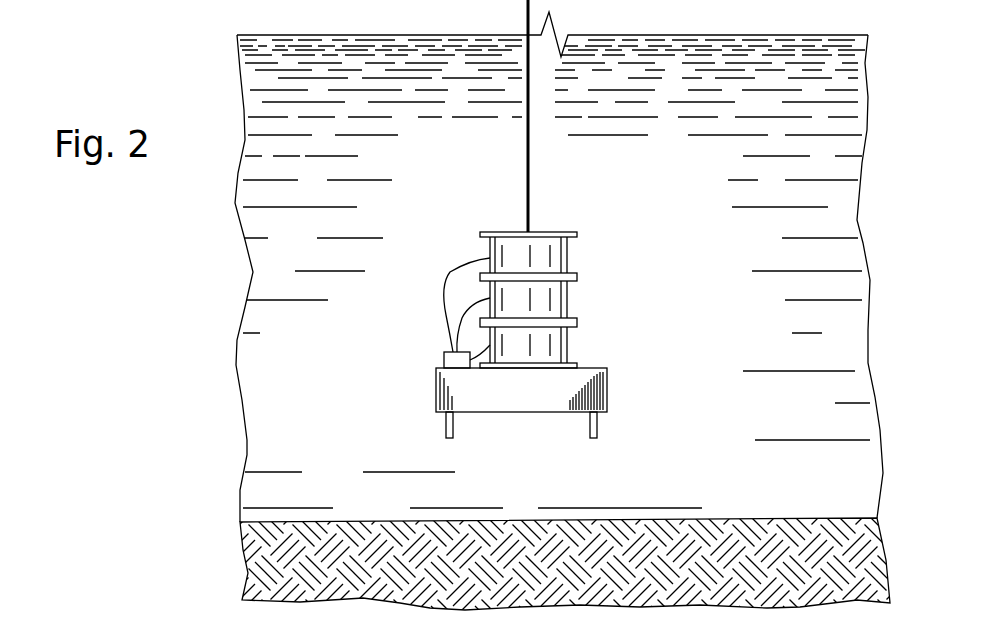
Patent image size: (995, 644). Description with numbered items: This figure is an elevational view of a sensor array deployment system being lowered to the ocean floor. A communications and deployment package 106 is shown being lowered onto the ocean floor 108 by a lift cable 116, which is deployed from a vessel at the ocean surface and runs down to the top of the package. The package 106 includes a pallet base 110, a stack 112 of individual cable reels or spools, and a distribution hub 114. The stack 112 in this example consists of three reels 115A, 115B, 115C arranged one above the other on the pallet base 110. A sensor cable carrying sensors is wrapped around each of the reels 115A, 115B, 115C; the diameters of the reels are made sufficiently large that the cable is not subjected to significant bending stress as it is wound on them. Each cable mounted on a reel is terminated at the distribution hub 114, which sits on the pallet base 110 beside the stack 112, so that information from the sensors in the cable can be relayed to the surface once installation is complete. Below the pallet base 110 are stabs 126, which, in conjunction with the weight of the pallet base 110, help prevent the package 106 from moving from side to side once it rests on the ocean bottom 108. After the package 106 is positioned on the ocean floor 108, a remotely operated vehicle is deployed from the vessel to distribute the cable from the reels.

The communications and deployment package 106 is at (398, 414).
The ocean floor 108 is at (755, 518).
The pallet base 110 is at (552, 393).
The stack of cable reels 112 is at (591, 272).
The distribution hub 114 is at (444, 360).
The first cable reel 115A is at (542, 252).
The second cable reel 115B is at (545, 297).
The third cable reel 115C is at (593, 351).
The lift cable 116 is at (524, 158).
The stabs 126 is at (594, 438).